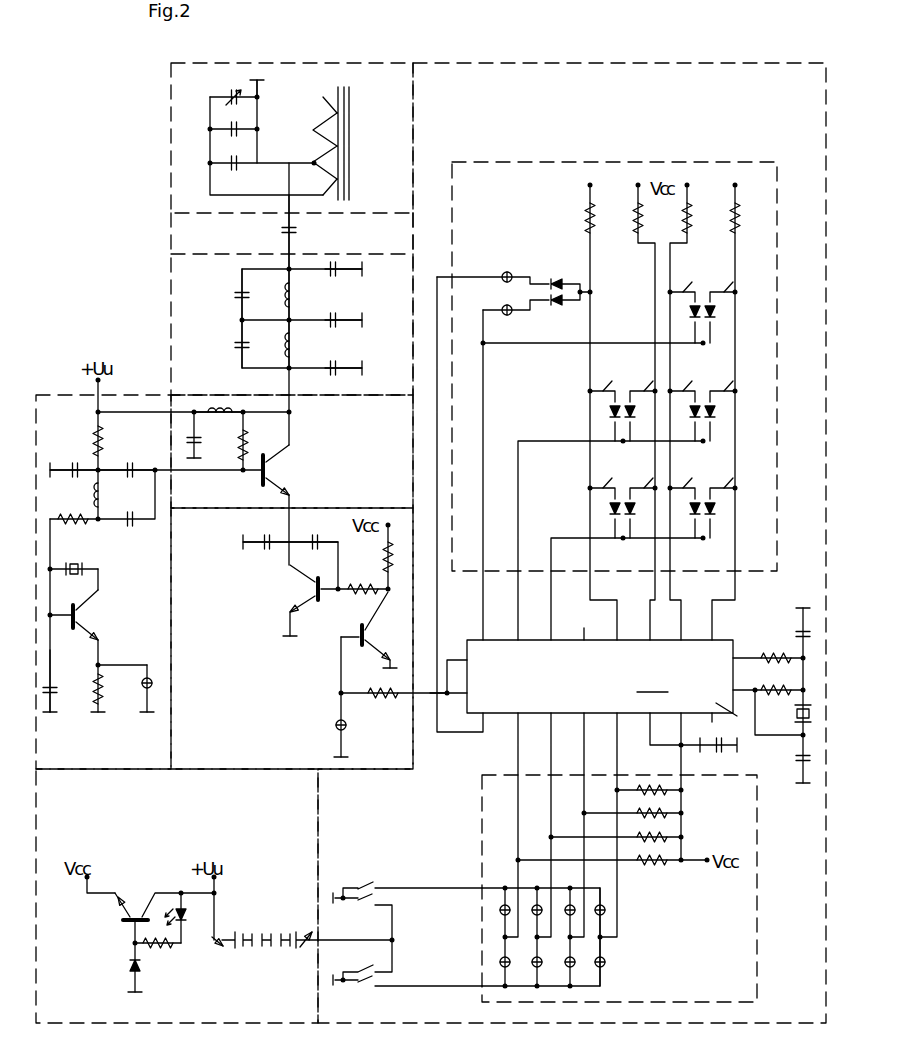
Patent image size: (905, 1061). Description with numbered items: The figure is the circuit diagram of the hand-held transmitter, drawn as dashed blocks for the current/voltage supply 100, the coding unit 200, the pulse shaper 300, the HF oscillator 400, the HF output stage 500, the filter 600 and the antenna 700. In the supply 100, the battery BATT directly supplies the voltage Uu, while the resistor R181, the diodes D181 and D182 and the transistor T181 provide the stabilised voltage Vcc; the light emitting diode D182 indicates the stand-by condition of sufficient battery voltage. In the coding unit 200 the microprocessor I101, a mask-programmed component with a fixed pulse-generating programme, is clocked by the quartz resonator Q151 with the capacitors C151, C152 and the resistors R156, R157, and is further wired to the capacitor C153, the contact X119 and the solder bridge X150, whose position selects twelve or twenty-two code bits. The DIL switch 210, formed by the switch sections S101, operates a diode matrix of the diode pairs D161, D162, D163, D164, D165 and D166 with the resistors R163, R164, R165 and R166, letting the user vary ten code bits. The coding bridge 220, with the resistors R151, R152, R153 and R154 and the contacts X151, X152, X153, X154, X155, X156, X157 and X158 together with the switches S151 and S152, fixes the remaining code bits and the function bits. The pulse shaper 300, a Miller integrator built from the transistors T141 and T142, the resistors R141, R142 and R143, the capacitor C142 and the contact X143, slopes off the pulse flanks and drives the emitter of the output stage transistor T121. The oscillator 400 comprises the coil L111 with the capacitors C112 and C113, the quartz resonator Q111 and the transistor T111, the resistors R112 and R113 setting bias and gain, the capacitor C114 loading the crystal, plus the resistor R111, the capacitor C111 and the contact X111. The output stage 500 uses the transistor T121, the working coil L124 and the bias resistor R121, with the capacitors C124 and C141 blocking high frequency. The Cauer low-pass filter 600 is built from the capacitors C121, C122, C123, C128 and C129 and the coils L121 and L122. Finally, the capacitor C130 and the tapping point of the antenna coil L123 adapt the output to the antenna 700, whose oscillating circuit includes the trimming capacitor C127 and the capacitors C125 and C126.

The current/voltage supply 100 is at (177, 896).
The coding unit 200 is at (572, 543).
The DIL switch 210 is at (614, 366).
The coding bridge 220 is at (619, 888).
The pulse shaper 300 is at (292, 638).
The HF oscillator 400 is at (103, 582).
The HF output stage 500 is at (292, 451).
The filter 600 is at (292, 304).
The antenna 700 is at (292, 138).
The trimming capacitor C127 is at (237, 102).
The capacitor C126 is at (234, 140).
The capacitor C125 is at (262, 174).
The antenna coil L123 is at (324, 150).
The capacitor C130 is at (299, 232).
The capacitor C129 is at (253, 294).
The coil L122 is at (302, 294).
The capacitor C123 is at (341, 279).
The capacitor C128 is at (253, 344).
The coil L121 is at (302, 344).
The capacitor C122 is at (341, 330).
The capacitor C121 is at (339, 377).
The coil L124 is at (218, 426).
The capacitor C124 is at (187, 437).
The resistor R121 is at (255, 441).
The output stage transistor T121 is at (291, 471).
The resistor R111 is at (109, 424).
The capacitor C111 is at (74, 480).
The capacitor C112 is at (126, 480).
The coil L111 is at (108, 494).
The resistor R112 is at (74, 530).
The capacitor C113 is at (126, 509).
The quartz resonator Q111 is at (74, 580).
The transistor T111 is at (87, 616).
The capacitor C114 is at (62, 681).
The resistor R113 is at (109, 688).
The soldered contact X111 is at (155, 688).
The capacitor C141 is at (266, 554).
The capacitor C142 is at (313, 554).
The transistor T141 is at (300, 600).
The resistor R141 is at (363, 600).
The resistor R142 is at (399, 556).
The transistor T142 is at (377, 630).
The resistor R143 is at (394, 705).
The soldered contact X143 is at (351, 725).
The transistor T181 is at (164, 898).
The light emitting diode D182 is at (188, 918).
The resistor R181 is at (159, 954).
The diode D181 is at (127, 967).
The battery BATT is at (302, 956).
The switch S151 is at (407, 912).
The switch S152 is at (407, 978).
The soldered contact X119 is at (493, 288).
The solder bridge X150 is at (516, 320).
The diodes D161 is at (565, 304).
The resistor R163 is at (601, 412).
The resistor R164 is at (648, 412).
The resistor R165 is at (692, 412).
The resistor R166 is at (736, 412).
The DIL switch S101 is at (663, 369).
The diodes D162 is at (702, 319).
The diodes D163 is at (622, 417).
The diodes D164 is at (702, 417).
The diodes D165 is at (622, 514).
The diodes D166 is at (702, 514).
The microprocessor I101 is at (593, 777).
The capacitor C153 is at (718, 756).
The resistor R157 is at (769, 669).
The resistor R156 is at (769, 711).
The capacitor C151 is at (811, 633).
The quartz resonator Q151 is at (810, 701).
The capacitor C152 is at (811, 762).
The resistor R154 is at (649, 800).
The resistor R153 is at (633, 824).
The resistor R152 is at (616, 848).
The resistor R151 is at (613, 872).
The soldered contact X151 is at (619, 912).
The soldered contact X152 is at (580, 910).
The soldered contact X153 is at (547, 913).
The soldered contact X154 is at (496, 912).
The soldered contact X155 is at (518, 961).
The soldered contact X156 is at (551, 961).
The soldered contact X157 is at (584, 961).
The soldered contact X158 is at (616, 961).